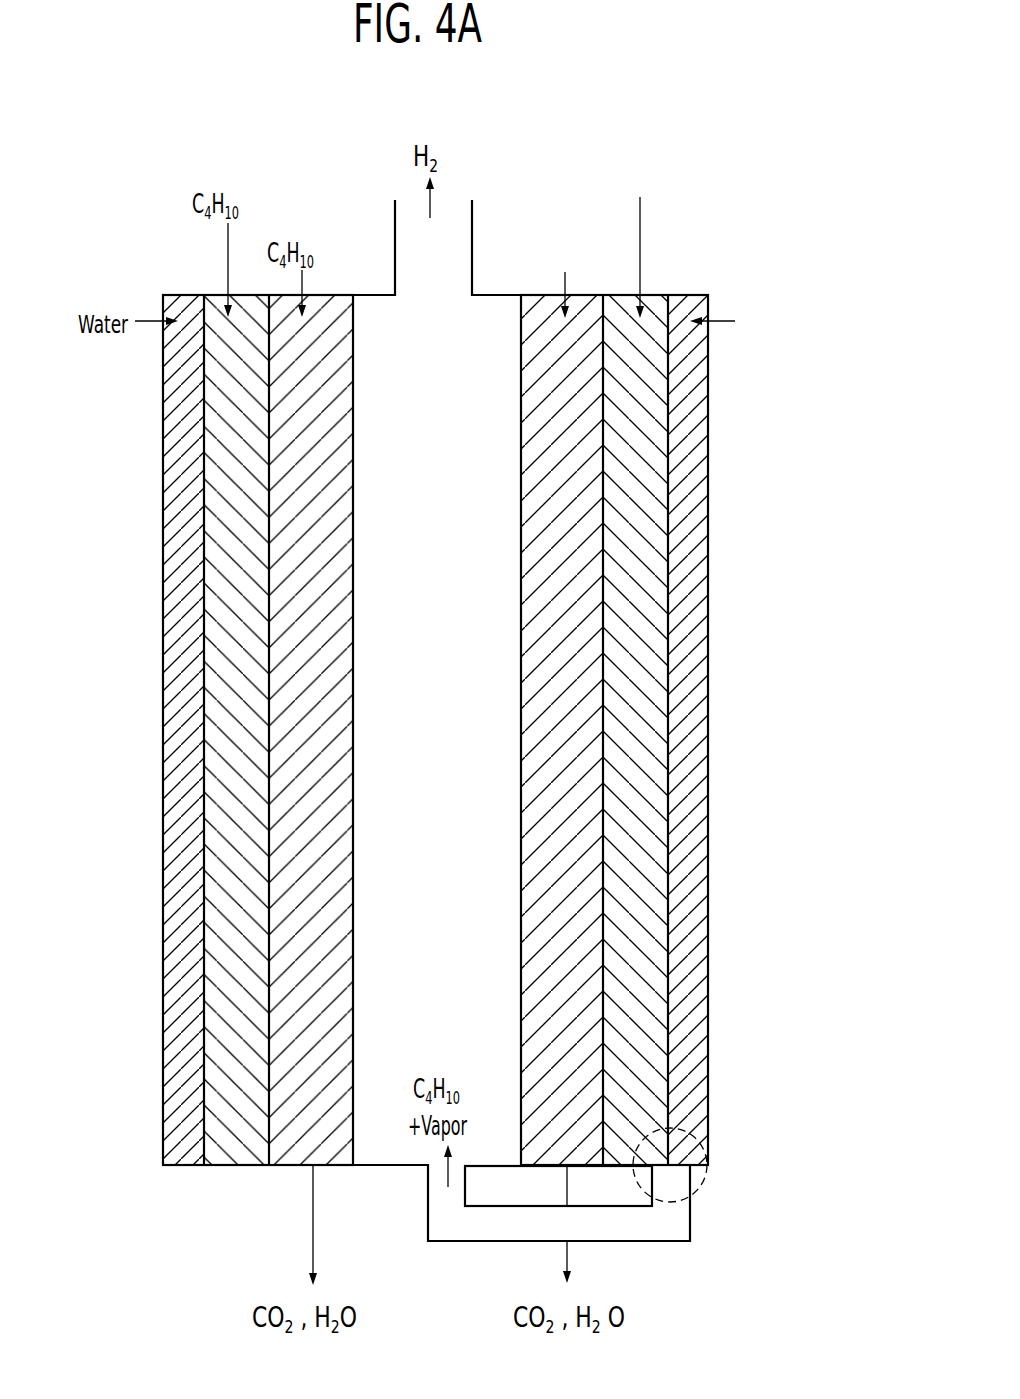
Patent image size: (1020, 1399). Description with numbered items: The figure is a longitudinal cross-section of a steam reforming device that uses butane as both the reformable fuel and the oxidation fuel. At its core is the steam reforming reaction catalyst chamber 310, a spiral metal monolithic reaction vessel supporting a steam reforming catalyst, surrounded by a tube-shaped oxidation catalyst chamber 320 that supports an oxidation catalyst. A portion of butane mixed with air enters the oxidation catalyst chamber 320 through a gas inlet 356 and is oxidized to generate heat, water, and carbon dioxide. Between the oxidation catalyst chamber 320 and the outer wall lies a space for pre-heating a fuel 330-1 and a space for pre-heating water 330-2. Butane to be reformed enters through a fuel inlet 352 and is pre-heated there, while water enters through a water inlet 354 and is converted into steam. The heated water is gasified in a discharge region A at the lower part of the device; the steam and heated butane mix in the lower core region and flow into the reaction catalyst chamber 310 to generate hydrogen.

The steam reforming reaction catalyst chamber 310 is at (470, 609).
The oxidation catalyst chamber 320 is at (580, 538).
The space for pre-heating a fuel 330-1 is at (645, 463).
The space for pre-heating water 330-2 is at (693, 406).
The fuel inlet 352 is at (642, 296).
The water inlet 354 is at (708, 297).
The gas inlet 356 is at (560, 297).
The discharge region A is at (702, 1182).